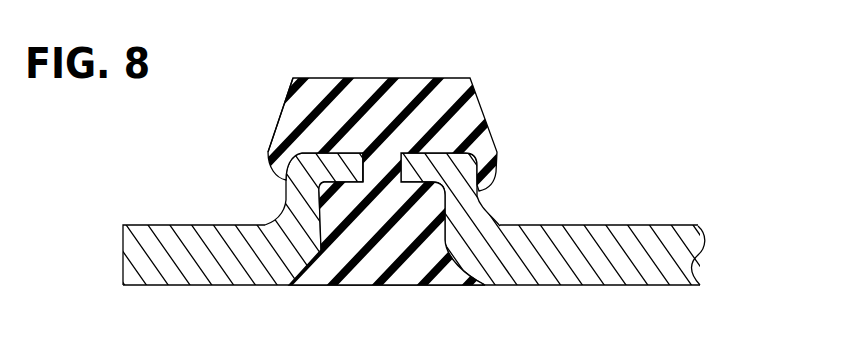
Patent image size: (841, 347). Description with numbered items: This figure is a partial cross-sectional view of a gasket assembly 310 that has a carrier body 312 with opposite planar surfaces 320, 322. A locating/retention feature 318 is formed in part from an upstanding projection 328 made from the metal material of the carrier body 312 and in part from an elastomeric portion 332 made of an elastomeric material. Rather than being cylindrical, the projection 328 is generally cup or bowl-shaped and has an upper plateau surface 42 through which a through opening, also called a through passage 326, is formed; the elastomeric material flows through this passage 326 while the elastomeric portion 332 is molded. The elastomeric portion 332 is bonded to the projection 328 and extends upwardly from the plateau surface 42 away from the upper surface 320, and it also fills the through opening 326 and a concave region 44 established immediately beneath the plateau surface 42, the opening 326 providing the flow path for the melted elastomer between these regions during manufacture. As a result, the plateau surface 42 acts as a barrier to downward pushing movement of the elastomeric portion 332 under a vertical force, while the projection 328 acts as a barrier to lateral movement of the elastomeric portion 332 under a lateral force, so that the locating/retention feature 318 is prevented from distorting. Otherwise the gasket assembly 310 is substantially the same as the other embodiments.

The gasket assembly 310 is at (384, 178).
The carrier body 312 is at (675, 235).
The locating/retention feature 318 is at (410, 158).
The upper planar surface 320 is at (652, 226).
The lower planar surface 322 is at (625, 287).
The through passage 326 is at (360, 168).
The upstanding projection 328 is at (477, 199).
The elastomeric portion 332 is at (282, 103).
The upper plateau surface 42 is at (437, 152).
The concave region 44 is at (320, 218).